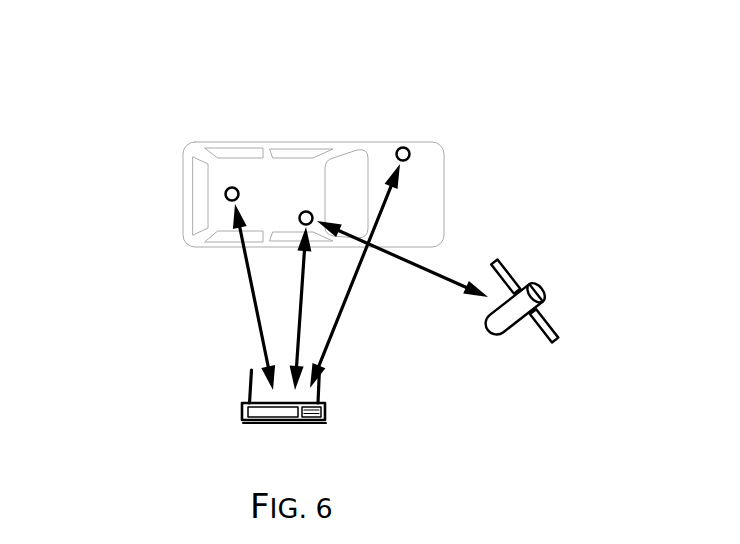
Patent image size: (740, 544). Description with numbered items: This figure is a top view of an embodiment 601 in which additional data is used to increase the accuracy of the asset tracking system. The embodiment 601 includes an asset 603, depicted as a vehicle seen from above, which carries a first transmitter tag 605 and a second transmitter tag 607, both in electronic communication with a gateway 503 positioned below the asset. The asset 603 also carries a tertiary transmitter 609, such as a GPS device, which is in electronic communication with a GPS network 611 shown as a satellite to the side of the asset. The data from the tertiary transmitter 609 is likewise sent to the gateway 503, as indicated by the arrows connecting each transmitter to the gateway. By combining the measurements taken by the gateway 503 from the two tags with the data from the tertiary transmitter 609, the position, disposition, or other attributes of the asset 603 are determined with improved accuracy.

The embodiment 601 is at (145, 72).
The asset 603 is at (444, 193).
The first transmitter tag 605 is at (407, 147).
The second transmitter tag 607 is at (226, 191).
The tertiary transmitter 609 is at (304, 212).
The GPS network 611 is at (545, 293).
The gateway 503 is at (325, 412).